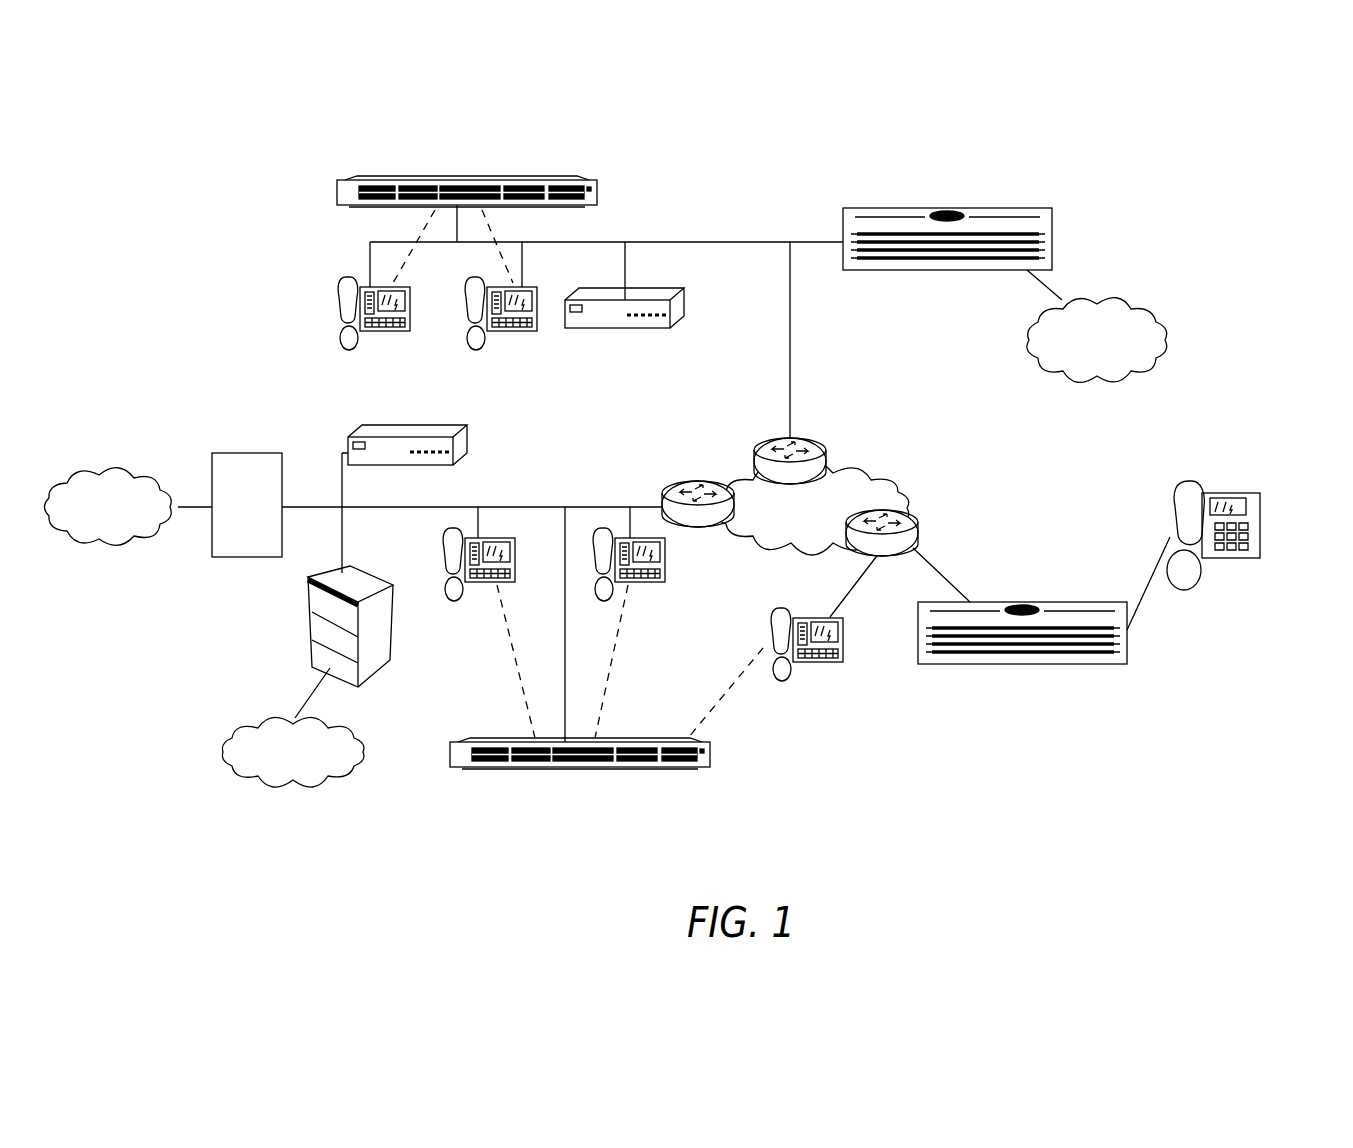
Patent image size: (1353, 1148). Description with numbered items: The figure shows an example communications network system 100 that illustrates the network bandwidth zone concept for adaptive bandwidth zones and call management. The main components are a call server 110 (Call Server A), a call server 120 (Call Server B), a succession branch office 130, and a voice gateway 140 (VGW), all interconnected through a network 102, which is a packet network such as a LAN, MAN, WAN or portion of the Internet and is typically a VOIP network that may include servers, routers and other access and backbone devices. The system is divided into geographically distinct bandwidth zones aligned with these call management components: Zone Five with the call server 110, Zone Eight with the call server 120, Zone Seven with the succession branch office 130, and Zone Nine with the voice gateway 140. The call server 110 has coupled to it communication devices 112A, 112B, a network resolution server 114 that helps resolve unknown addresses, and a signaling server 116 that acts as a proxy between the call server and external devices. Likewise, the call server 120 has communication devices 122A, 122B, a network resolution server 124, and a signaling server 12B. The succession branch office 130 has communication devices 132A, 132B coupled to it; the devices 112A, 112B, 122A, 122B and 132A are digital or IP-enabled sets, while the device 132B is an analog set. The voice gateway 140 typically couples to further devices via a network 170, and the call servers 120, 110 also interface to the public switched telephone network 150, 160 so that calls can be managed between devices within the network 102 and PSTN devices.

The communications network system 100 is at (1063, 113).
The network 102 is at (868, 472).
The call server 110 is at (371, 670).
The communication device 112A is at (449, 548).
The communication device 112B is at (665, 553).
The network resolution (NRS) server 114 is at (468, 433).
The signaling server 116 is at (714, 752).
The call server 120 is at (1052, 216).
The communication device 122A is at (345, 292).
The communication device 122B is at (537, 297).
The network resolution (NRS) server 124 is at (684, 299).
The signaling server 12B is at (598, 191).
The succession branch office 130 is at (1030, 600).
The communication device 132A is at (807, 614).
The communication device 132B is at (1237, 493).
The voice gateway 140 is at (212, 470).
The public switched telephone network 150 is at (1157, 303).
The public switched telephone network 160 is at (366, 740).
The network 170 is at (118, 470).